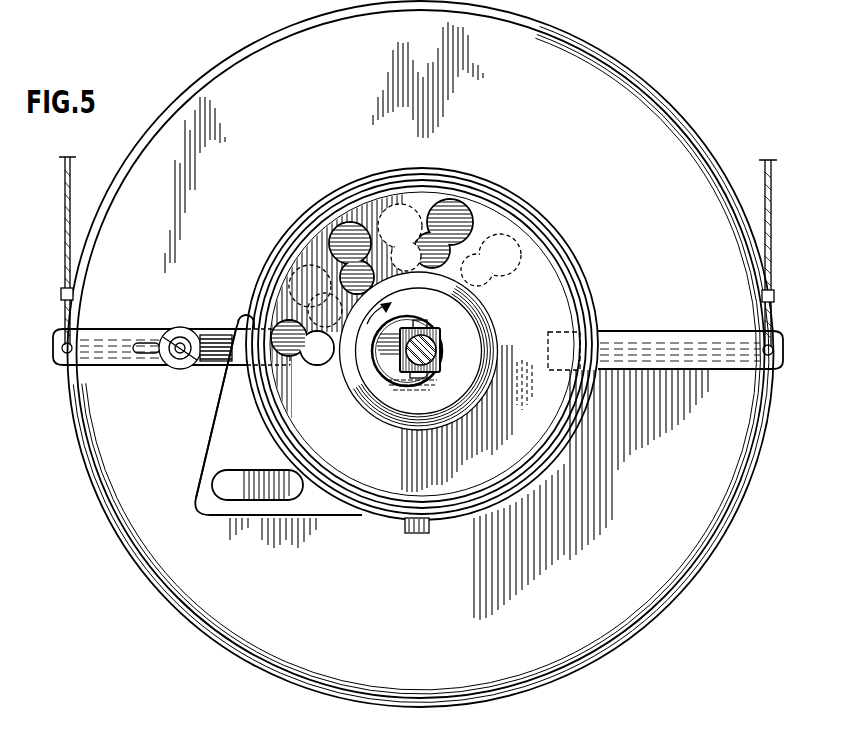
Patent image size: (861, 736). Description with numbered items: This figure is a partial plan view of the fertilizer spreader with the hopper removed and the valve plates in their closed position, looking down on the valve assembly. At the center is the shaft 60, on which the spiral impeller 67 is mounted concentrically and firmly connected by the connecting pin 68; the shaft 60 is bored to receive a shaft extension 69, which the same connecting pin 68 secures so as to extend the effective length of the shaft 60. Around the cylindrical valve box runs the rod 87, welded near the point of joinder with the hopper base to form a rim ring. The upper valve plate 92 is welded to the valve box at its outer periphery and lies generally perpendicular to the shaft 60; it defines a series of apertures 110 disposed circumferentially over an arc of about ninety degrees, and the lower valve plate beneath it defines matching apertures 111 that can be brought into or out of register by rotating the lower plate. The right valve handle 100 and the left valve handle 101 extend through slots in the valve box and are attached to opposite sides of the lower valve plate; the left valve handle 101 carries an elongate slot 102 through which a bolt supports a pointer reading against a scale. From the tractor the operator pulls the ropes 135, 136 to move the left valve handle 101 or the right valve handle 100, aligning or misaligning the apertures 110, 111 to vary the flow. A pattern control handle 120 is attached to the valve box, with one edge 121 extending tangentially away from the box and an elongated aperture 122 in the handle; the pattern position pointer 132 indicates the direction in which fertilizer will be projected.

The shaft 60 is at (430, 375).
The spiral impeller 67 is at (487, 348).
The connecting pin 68 is at (411, 373).
The shaft extension 69 is at (403, 352).
The rod 87 is at (587, 293).
The upper valve plate 92 is at (540, 337).
The right valve handle 100 is at (748, 366).
The left valve handle 101 is at (132, 330).
The elongate slot 102 is at (218, 345).
The apertures 110 is at (471, 226).
The apertures 111 is at (510, 268).
The pattern control handle 120 is at (253, 415).
The edge 121 is at (210, 437).
The elongated aperture 122 is at (214, 492).
The pattern position pointer 132 is at (426, 534).
The rope 135 is at (65, 175).
The rope 136 is at (771, 176).